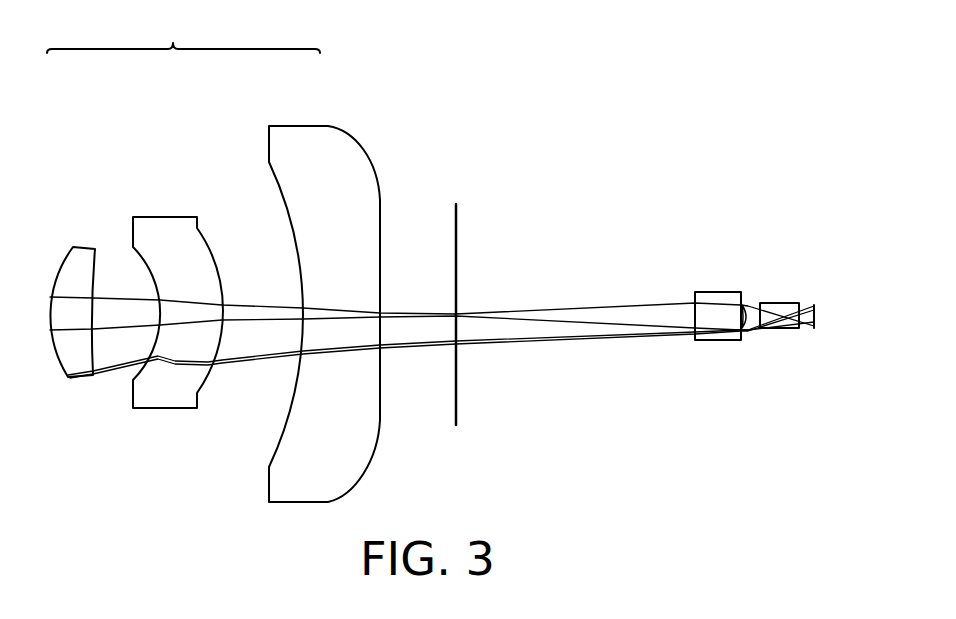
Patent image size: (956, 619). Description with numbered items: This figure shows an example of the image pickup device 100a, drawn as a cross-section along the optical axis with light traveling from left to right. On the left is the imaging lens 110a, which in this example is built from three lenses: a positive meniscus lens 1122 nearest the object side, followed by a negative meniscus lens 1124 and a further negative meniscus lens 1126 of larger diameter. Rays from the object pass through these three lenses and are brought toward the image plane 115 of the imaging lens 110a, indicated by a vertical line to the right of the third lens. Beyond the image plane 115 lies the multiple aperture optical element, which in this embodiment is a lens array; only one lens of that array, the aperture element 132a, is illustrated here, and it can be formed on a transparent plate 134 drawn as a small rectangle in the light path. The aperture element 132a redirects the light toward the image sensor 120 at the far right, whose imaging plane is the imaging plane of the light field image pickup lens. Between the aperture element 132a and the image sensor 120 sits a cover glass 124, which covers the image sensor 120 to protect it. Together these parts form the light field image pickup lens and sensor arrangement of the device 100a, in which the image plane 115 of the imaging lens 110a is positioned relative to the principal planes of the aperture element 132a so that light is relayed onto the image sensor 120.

The image pickup device 100a is at (450, 271).
The imaging lens 110a is at (213, 257).
The positive meniscus lens 1122 is at (82, 262).
The negative meniscus lens 1124 is at (177, 233).
The negative meniscus lens 1126 is at (298, 148).
The image plane of the imaging lens 115 is at (456, 397).
The transparent plate 134 is at (702, 298).
The aperture element 132a is at (748, 307).
The cover glass 124 is at (783, 307).
The image sensor 120 is at (815, 307).